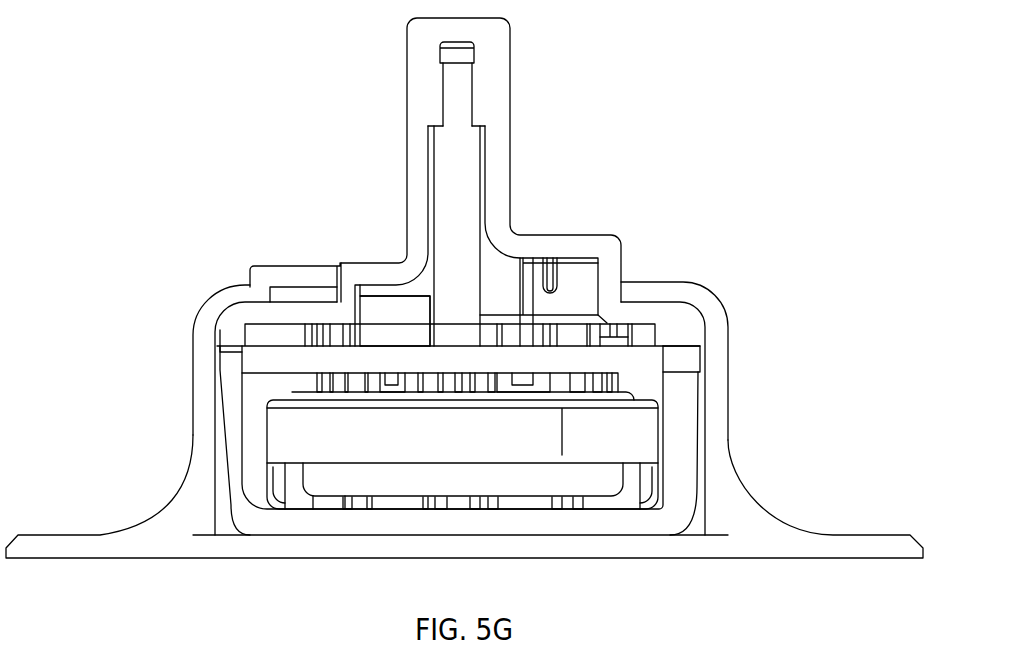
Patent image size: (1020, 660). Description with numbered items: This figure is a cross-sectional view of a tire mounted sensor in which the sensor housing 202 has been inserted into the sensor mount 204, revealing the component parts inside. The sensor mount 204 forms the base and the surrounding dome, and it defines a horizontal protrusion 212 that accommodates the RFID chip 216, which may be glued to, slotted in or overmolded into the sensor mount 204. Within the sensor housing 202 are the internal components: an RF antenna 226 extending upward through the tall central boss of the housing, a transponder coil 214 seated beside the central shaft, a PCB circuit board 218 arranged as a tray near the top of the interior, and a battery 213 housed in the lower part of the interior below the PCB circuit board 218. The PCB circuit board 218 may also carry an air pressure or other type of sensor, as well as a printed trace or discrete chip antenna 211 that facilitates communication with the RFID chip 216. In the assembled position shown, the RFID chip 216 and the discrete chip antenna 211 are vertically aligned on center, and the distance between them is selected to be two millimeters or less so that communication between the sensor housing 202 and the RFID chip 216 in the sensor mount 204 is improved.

The sensor housing 202 is at (485, 95).
The sensor mount 204 is at (173, 518).
The discrete chip antenna 211 is at (308, 333).
The horizontal protrusion 212 is at (317, 272).
The battery 213 is at (647, 428).
The transponder coil 214 is at (400, 322).
The RFID chip 216 is at (287, 297).
The PCB circuit board 218 is at (248, 356).
The RF antenna 226 is at (452, 98).